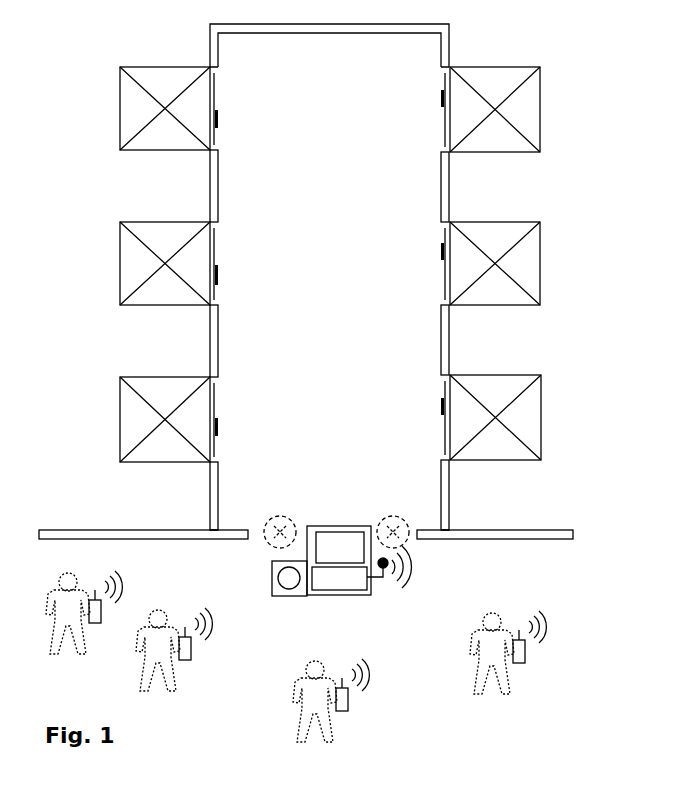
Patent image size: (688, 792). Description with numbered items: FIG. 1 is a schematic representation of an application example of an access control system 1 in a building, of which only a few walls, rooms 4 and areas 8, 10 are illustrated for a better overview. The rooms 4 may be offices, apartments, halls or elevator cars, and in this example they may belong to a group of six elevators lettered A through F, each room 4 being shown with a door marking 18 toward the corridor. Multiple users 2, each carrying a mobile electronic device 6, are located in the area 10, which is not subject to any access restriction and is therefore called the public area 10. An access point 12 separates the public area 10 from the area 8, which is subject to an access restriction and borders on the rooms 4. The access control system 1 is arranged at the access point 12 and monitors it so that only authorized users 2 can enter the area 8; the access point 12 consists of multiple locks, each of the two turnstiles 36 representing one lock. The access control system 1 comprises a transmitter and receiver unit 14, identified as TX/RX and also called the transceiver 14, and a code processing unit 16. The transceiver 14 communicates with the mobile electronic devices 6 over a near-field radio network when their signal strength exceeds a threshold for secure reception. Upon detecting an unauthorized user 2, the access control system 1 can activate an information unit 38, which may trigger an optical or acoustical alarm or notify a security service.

The access control system 1 is at (359, 551).
The user 2 is at (78, 590).
The room 4 is at (143, 67).
The mobile electronic device 6 is at (102, 616).
The area 8 is at (321, 229).
The public area 10 is at (424, 705).
The access point 12 is at (305, 507).
The transmitter and receiver unit 14 is at (350, 590).
The code processing unit 16 is at (321, 530).
The door sensor 18 is at (217, 102).
The turnstile 36 is at (278, 516).
The information unit 38 is at (282, 596).